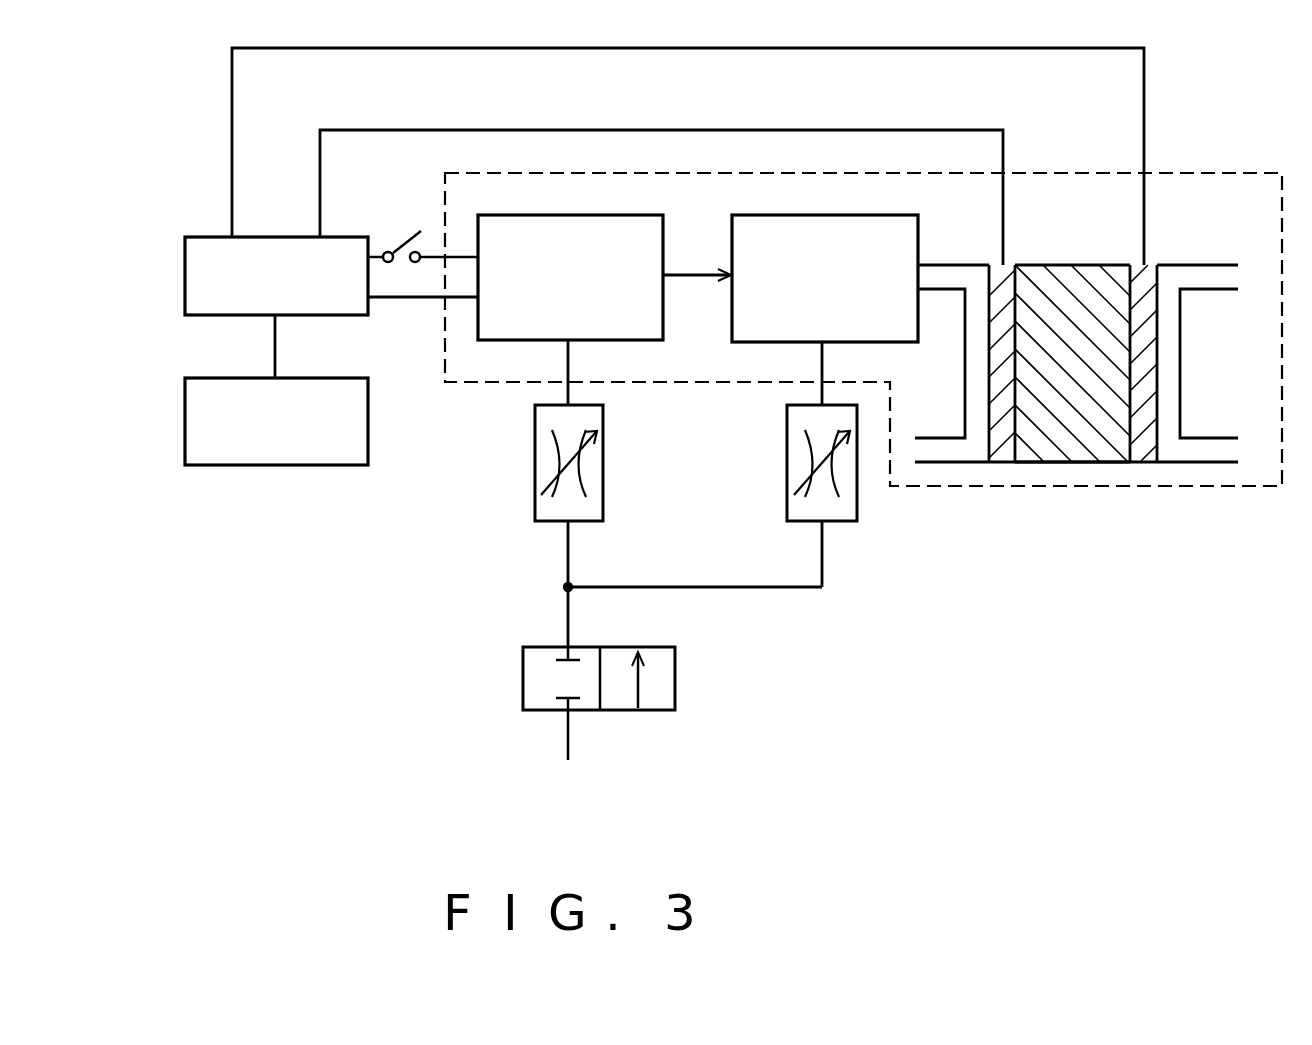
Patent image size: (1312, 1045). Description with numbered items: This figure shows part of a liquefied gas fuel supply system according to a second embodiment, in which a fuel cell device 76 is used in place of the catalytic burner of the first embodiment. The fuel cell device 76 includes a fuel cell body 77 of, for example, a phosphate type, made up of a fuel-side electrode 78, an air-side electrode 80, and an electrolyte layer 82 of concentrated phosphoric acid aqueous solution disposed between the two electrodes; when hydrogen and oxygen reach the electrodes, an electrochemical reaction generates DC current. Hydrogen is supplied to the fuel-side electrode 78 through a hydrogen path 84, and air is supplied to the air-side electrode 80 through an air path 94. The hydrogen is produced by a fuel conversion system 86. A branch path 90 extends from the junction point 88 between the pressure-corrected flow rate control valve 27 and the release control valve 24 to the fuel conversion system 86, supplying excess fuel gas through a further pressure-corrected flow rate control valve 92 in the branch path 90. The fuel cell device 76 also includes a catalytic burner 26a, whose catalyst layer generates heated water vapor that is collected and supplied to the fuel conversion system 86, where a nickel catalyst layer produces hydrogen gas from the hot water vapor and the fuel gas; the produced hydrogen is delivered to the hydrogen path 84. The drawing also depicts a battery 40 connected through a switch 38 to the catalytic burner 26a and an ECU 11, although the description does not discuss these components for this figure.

The ECU (electronic control unit) 11 is at (285, 452).
The release control valve 24 is at (523, 683).
The catalytic burner 26a is at (630, 230).
The pressure-corrected flow rate control valve 27 is at (594, 505).
The switch 38 is at (400, 247).
The battery 40 is at (198, 262).
The fuel cell device 76 is at (1050, 185).
The fuel cell body 77 is at (1062, 388).
The fuel-side electrode 78 is at (998, 455).
The air-side electrode 80 is at (1142, 455).
The electrolyte layer 82 is at (1078, 445).
The hydrogen path 84 is at (947, 274).
The fuel conversion system 86 is at (826, 232).
The junction point 88 is at (560, 588).
The branch path 90 is at (725, 592).
The pressure-corrected flow rate control valve 92 is at (848, 515).
The air path 94 is at (1213, 450).